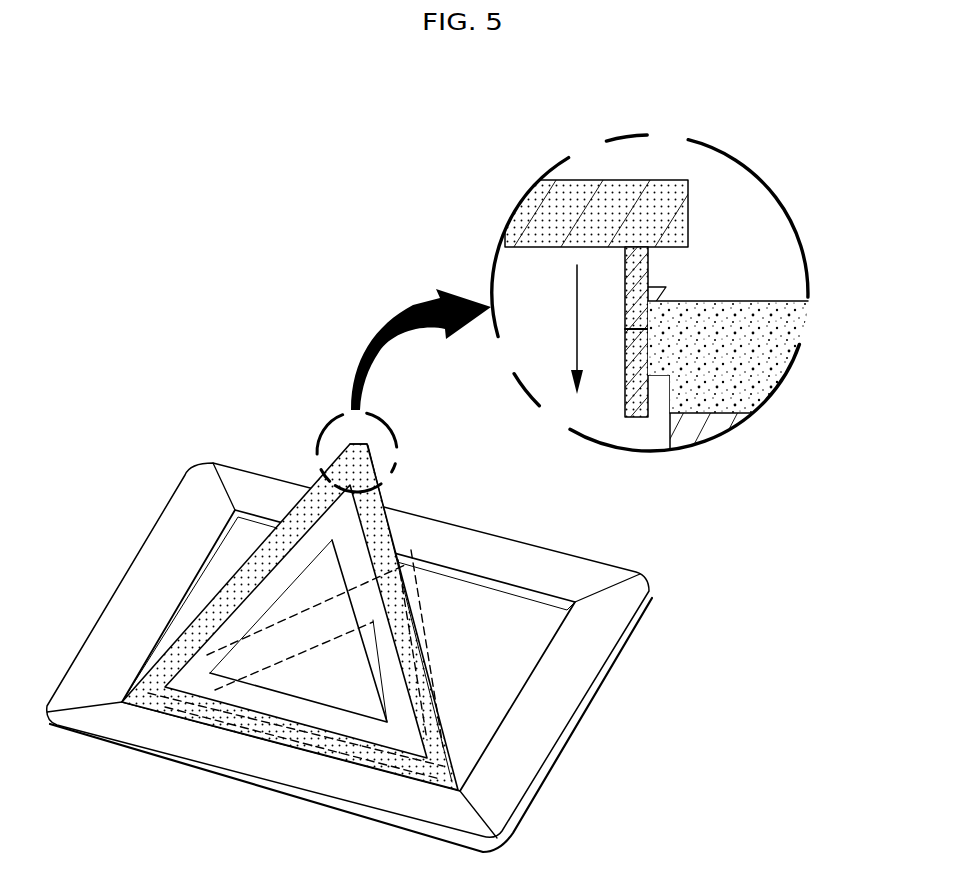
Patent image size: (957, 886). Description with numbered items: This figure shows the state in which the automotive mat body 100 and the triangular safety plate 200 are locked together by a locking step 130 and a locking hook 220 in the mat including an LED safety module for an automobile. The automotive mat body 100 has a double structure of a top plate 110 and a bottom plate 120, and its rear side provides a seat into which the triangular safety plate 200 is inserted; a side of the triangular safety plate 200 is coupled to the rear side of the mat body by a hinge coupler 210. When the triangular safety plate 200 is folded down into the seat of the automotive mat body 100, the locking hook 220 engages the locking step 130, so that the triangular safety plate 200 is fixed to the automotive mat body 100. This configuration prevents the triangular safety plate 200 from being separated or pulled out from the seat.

The automotive mat body 100 is at (645, 573).
The top plate 110 is at (713, 437).
The bottom plate 120 is at (787, 357).
The locking step 130 is at (653, 360).
The triangular safety plate 200 is at (290, 504).
The hinge coupler 210 is at (302, 743).
The locking hook 220 is at (368, 447).